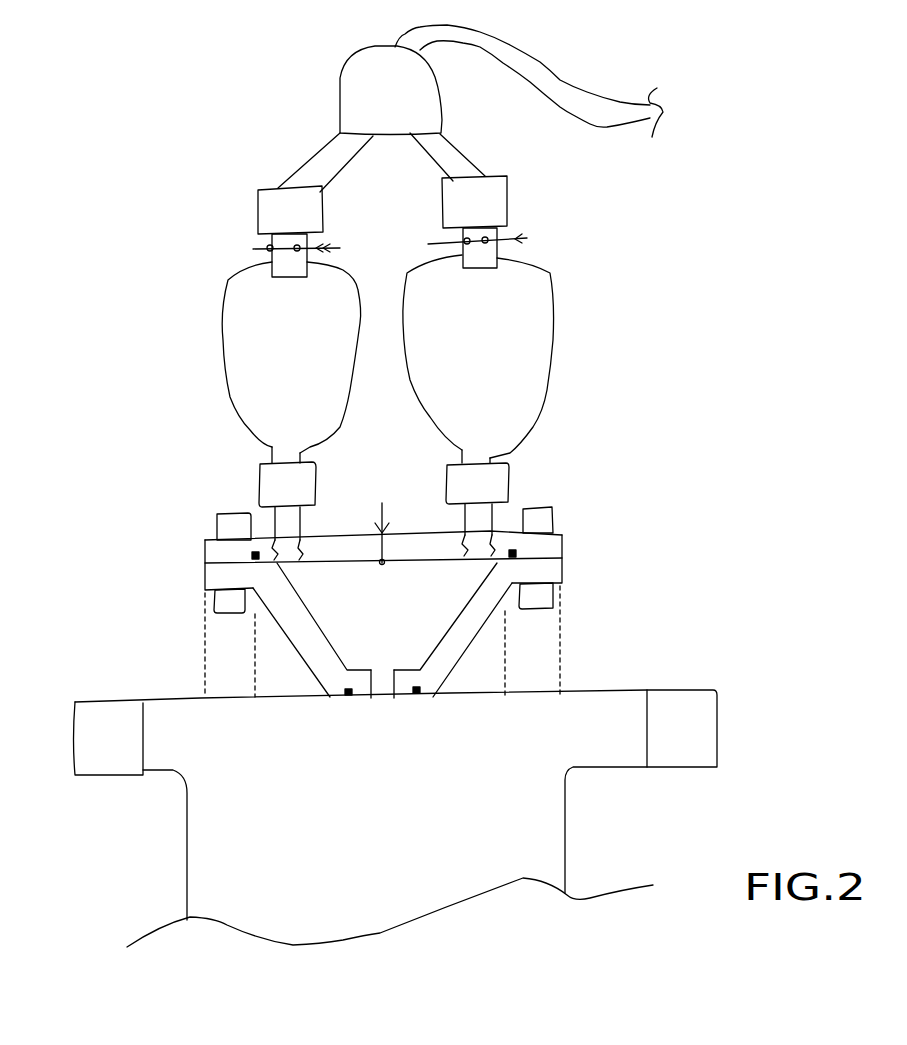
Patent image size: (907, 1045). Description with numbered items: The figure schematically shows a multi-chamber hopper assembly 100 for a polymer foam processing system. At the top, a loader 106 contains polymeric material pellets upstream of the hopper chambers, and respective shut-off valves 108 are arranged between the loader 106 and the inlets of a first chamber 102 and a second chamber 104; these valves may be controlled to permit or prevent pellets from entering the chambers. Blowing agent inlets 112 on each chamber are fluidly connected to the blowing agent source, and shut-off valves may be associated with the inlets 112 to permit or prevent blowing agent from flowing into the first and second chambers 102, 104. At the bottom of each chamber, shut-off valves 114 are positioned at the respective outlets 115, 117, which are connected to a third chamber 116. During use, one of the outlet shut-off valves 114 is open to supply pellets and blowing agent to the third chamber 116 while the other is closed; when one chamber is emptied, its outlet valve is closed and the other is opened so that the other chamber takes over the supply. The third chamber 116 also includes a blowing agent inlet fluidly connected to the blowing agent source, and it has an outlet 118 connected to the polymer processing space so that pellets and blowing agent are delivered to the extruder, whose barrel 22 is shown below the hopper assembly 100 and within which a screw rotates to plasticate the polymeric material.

The multi-chamber hopper assembly 100 is at (660, 218).
The first chamber 102 is at (291, 362).
The second chamber 104 is at (478, 359).
The loader 106 is at (470, 108).
The shut-off valves 108 is at (382, 226).
The blowing agent inlets 112 is at (411, 245).
The shut-off valves 114 is at (384, 511).
The outlet 115 is at (253, 457).
The third chamber 116 is at (383, 600).
The outlet 117 is at (515, 472).
The outlet 118 is at (382, 690).
The barrel 22 is at (607, 707).